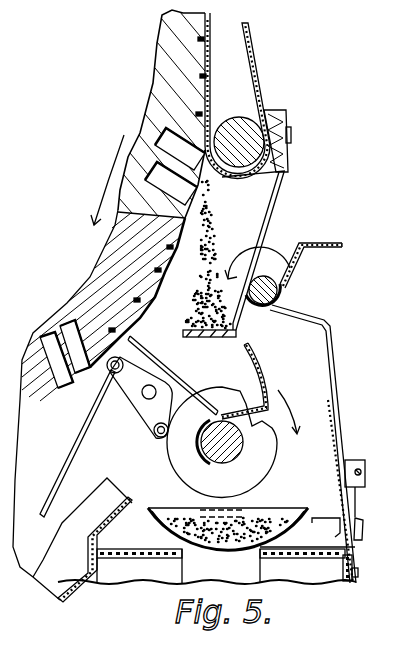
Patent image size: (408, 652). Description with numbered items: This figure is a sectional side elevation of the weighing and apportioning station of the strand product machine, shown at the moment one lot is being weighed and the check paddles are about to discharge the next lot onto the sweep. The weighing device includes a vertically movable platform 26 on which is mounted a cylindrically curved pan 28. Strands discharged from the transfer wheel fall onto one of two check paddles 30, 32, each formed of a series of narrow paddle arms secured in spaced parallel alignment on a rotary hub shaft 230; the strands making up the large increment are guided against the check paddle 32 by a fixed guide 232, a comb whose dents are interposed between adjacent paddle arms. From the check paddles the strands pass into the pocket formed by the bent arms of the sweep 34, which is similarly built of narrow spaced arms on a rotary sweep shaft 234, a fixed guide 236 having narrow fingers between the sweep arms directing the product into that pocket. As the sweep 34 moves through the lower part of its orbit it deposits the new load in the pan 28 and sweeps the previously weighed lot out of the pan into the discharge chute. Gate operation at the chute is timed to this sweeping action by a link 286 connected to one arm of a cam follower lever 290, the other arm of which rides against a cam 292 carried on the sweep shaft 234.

The vertically movable platform 26 is at (184, 578).
The cylindrically curved pan 28 is at (163, 488).
The check paddle 30 is at (341, 241).
The check paddle 32 is at (183, 332).
The sweep 34 is at (267, 376).
The rotary hub shaft 230 is at (281, 291).
The fixed guide 232 is at (276, 212).
The rotary sweep shaft 234 is at (252, 458).
The fixed guide 236 is at (173, 369).
The link 286 is at (74, 439).
The cam follower lever 290 is at (133, 389).
The cam 292 is at (166, 446).